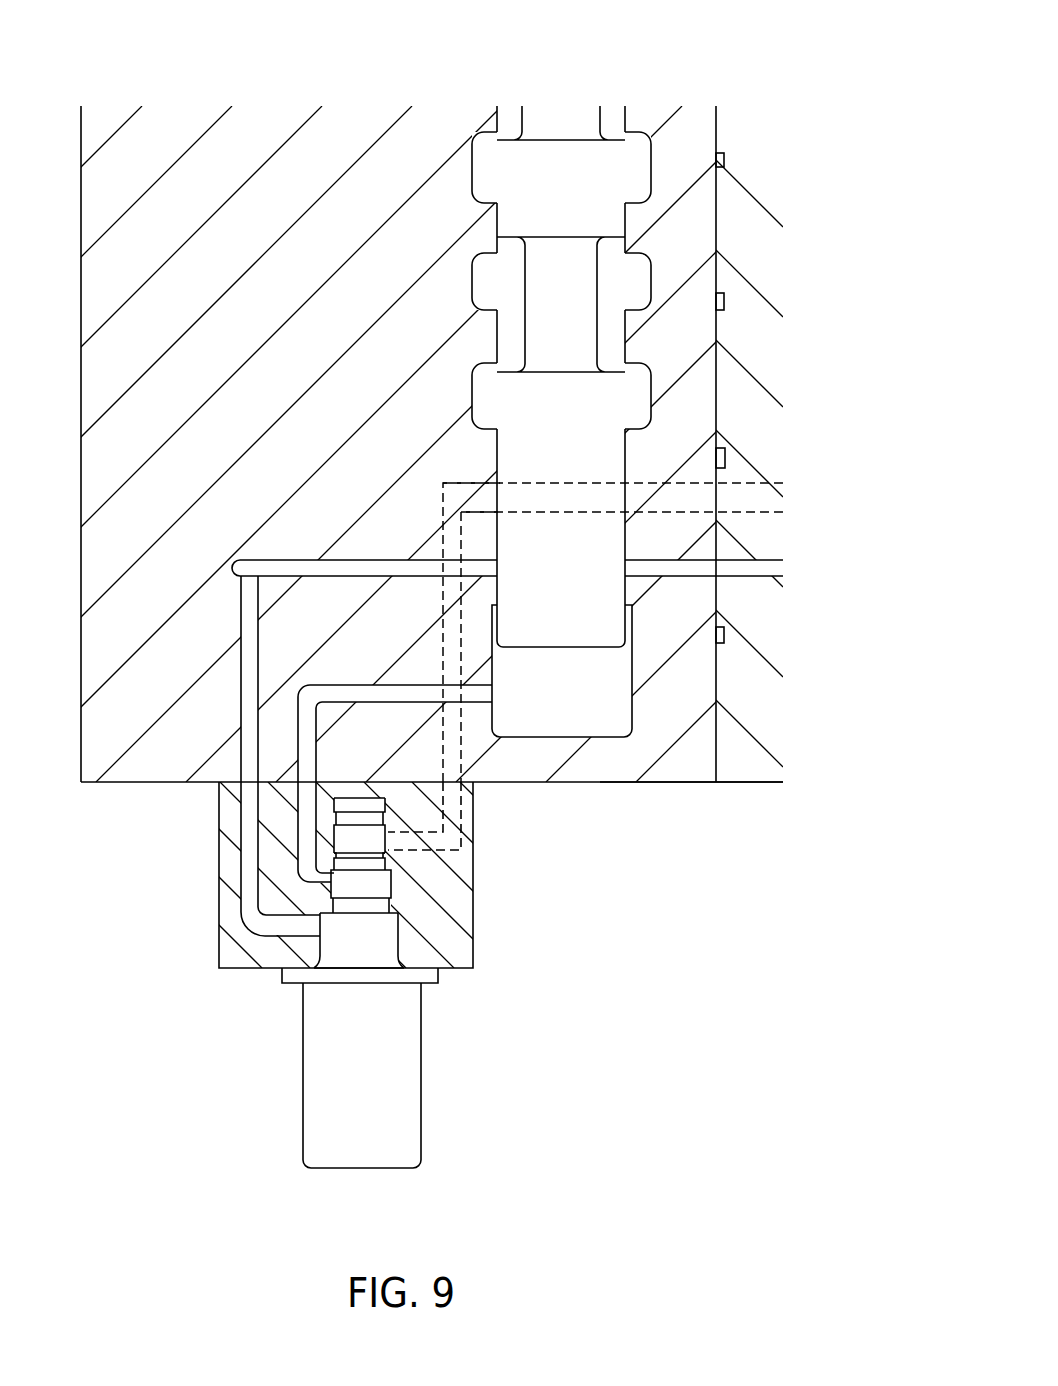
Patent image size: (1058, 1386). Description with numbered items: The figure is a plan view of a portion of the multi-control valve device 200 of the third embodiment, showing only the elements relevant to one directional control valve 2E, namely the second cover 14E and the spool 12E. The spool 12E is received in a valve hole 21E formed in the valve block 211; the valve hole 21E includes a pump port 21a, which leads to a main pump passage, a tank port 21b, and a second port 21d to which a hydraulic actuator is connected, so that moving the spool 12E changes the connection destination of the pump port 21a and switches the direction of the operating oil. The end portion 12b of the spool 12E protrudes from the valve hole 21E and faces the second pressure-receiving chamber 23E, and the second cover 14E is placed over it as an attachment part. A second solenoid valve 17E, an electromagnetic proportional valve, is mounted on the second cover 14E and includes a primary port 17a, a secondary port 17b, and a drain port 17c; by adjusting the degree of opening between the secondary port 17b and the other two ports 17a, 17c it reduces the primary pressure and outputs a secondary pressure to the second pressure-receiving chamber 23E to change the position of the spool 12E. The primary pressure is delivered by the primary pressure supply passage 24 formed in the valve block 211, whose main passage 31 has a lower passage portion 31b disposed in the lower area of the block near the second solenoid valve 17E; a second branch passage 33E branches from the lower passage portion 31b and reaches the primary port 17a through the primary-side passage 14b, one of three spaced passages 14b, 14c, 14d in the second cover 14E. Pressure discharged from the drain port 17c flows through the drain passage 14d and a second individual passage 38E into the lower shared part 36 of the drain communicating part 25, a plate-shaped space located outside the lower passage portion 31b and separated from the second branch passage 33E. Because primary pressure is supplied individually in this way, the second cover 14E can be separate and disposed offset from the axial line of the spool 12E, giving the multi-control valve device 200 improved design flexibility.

The multi-control valve device 200 is at (710, 78).
The valve block 211 is at (668, 778).
The valve hole 21E is at (513, 304).
The pump port 21a is at (480, 168).
The second port 21d is at (480, 286).
The tank port 21b is at (480, 391).
The spool 12E is at (600, 343).
The end portion 12b is at (592, 621).
The second pressure-receiving chamber 23E is at (586, 705).
The lower shared part 36 is at (474, 537).
The drain communicating part 25 is at (260, 563).
The second individual passage 38E is at (253, 609).
The second branch passage 33E is at (445, 655).
The main passage 31 is at (630, 598).
The primary pressure supply passage 24 is at (613, 632).
The lower passage portion 31b is at (468, 486).
The second cover 14E is at (337, 922).
The drain passage 14d is at (243, 873).
The passage 14c is at (301, 821).
The primary-side passage 14b is at (465, 815).
The primary port 17a is at (418, 828).
The secondary port 17b is at (334, 878).
The drain port 17c is at (318, 935).
The second solenoid valve 17E is at (360, 1168).
The directional control valve 2E is at (332, 1018).